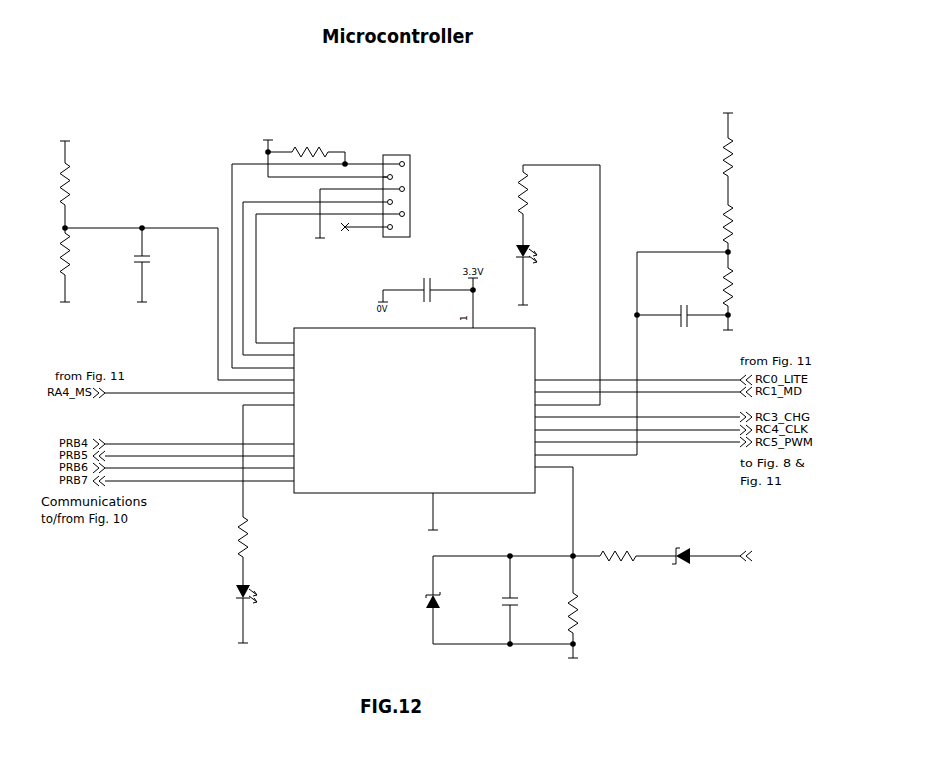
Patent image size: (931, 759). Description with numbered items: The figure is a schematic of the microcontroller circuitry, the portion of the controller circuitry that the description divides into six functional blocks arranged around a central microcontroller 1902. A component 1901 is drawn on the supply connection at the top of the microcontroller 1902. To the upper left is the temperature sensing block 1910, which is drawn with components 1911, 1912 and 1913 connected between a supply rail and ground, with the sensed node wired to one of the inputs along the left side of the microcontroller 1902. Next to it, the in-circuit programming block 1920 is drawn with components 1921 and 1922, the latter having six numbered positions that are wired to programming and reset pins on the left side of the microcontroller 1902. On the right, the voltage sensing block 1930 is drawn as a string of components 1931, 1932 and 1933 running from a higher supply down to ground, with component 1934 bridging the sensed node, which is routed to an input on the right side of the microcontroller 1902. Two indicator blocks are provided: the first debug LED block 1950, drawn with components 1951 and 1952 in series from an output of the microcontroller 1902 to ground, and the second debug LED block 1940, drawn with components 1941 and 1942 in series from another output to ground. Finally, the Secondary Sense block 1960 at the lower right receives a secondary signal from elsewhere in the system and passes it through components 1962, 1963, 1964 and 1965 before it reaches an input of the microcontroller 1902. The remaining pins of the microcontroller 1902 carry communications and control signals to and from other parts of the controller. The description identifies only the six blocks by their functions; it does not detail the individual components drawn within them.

The decoupling capacitor 1901 is at (425, 278).
The microcontroller 1902 is at (416, 435).
The temperature sensing 1910 is at (175, 254).
The resistor 1911 is at (86, 184).
The thermistor resistor 1912 is at (86, 254).
The capacitor 1913 is at (168, 265).
The in-circuit programming 1920 is at (334, 222).
The pull-up resistor 1921 is at (306, 145).
The programming connector 1922 is at (391, 182).
The voltage sensing 1930 is at (655, 351).
The resistor 1931 is at (749, 157).
The resistor / zener diode 1932 is at (719, 402).
The resistor 1933 is at (749, 287).
The capacitor 1934 is at (682, 303).
The Debug LED2 1940 is at (281, 531).
The resistor 1941 is at (221, 537).
The light emitting diode 1942 is at (226, 593).
The Debug LED1 1950 is at (567, 254).
The resistor 1951 is at (544, 193).
The light emitting diode 1952 is at (550, 252).
The Secondary Sense 1960 is at (625, 569).
The resistor 1962 is at (618, 568).
The resistor 1963 is at (595, 613).
The capacitor 1964 is at (530, 600).
The zener diode 1965 is at (454, 601).